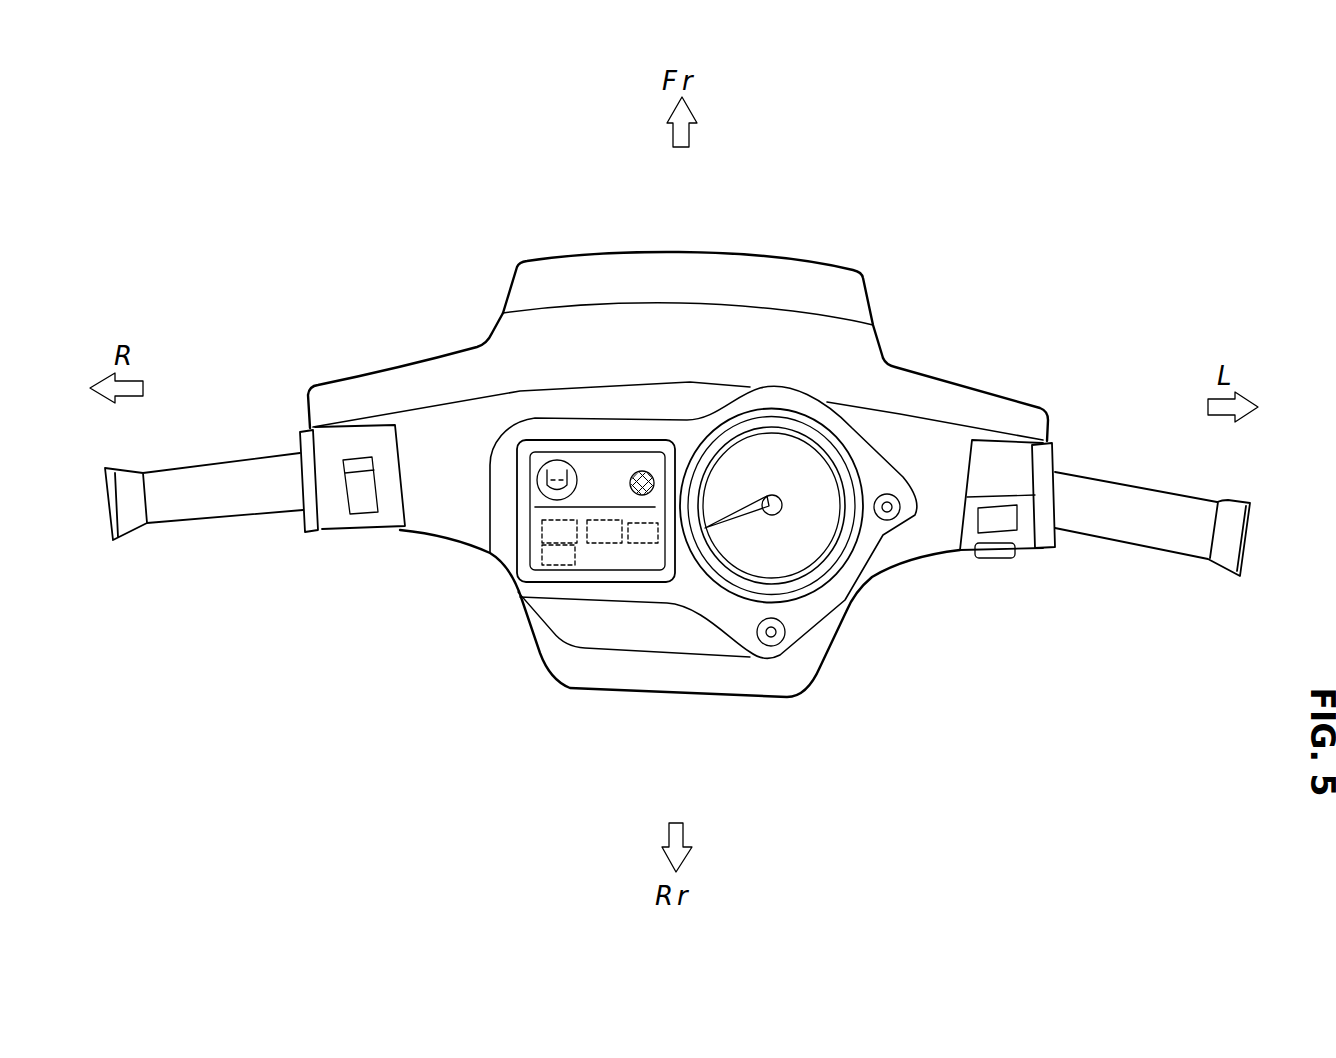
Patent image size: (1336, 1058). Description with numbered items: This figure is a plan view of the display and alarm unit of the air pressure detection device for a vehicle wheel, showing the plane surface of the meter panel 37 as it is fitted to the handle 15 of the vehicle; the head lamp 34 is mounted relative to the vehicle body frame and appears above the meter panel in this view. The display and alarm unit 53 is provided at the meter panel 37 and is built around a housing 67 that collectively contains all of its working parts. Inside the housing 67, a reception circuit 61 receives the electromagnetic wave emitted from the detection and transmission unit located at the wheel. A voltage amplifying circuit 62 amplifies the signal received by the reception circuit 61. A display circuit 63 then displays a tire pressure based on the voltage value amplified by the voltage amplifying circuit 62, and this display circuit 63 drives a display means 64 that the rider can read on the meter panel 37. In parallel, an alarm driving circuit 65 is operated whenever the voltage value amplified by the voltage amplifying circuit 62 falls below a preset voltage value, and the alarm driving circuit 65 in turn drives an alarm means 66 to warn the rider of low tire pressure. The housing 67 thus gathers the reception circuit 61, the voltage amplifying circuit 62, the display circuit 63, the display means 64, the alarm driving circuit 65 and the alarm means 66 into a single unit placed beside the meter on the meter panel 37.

The handle 15 is at (1080, 477).
The head lamp 34 is at (784, 258).
The meter panel 37 is at (866, 438).
The display and alarm unit 53 is at (593, 426).
The reception circuit 61 is at (540, 533).
The voltage amplifying circuit 62 is at (605, 545).
The display circuit 63 is at (643, 547).
The display means 64 is at (562, 460).
The alarm driving circuit 65 is at (545, 557).
The alarm means 66 is at (645, 471).
The housing 67 is at (518, 470).